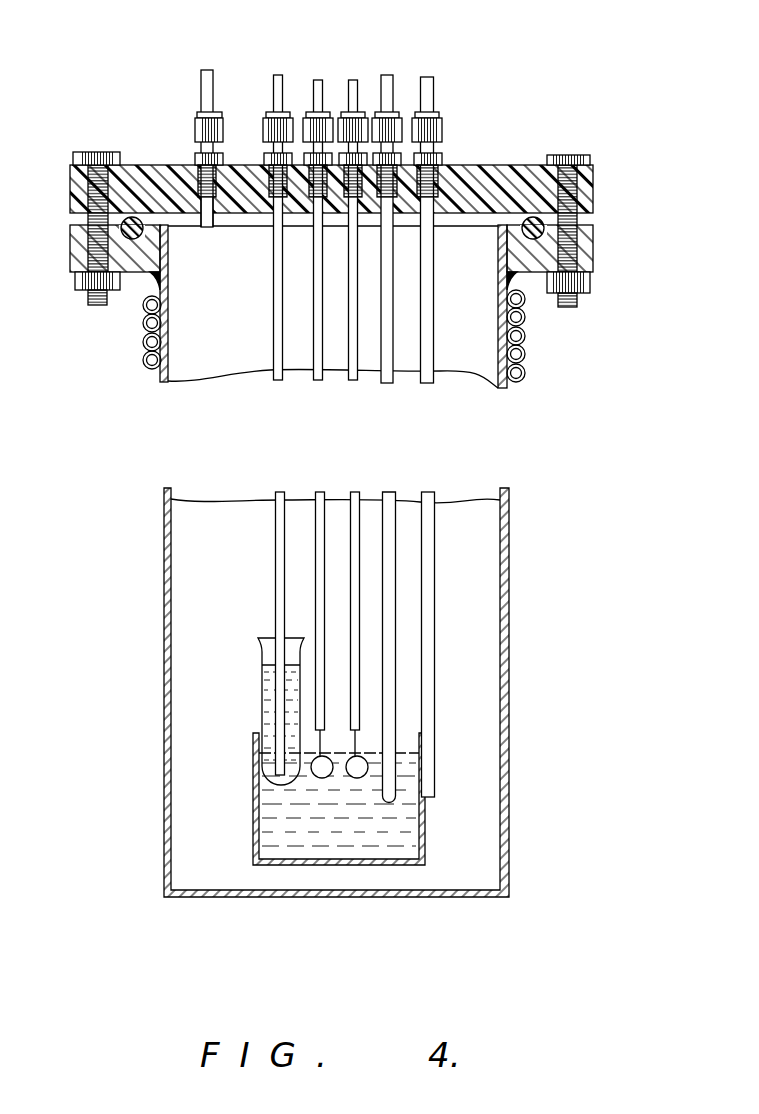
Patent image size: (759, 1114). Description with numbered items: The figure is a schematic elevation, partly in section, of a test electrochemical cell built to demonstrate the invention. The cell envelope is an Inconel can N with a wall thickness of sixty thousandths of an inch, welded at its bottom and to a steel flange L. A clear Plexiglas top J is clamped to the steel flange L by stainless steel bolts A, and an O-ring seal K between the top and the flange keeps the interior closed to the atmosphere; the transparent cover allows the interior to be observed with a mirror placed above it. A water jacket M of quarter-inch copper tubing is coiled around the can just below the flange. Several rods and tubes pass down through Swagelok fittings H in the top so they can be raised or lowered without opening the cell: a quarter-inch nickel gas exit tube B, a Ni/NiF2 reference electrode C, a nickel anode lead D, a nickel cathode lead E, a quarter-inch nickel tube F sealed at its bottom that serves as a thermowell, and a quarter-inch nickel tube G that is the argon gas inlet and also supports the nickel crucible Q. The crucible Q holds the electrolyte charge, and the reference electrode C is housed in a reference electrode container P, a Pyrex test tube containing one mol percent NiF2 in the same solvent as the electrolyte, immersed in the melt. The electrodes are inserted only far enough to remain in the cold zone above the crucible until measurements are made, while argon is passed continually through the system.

The stainless steel bolt A is at (83, 152).
The nickel tube (gas exit) B is at (207, 228).
The reference electrode C is at (279, 385).
The anode lead D is at (319, 385).
The cathode lead E is at (355, 385).
The nickel tube (thermowell) F is at (388, 385).
The nickel tube (gas inlet and crucible support) G is at (428, 385).
The Swagelok fittings H is at (433, 122).
The clear Plexiglas top J is at (594, 178).
The O-ring seal K is at (521, 223).
The steel flange L is at (594, 240).
The water jacket M is at (525, 352).
The Inconel can N is at (510, 604).
The reference electrode container P is at (262, 700).
The nickel crucible Q is at (426, 826).